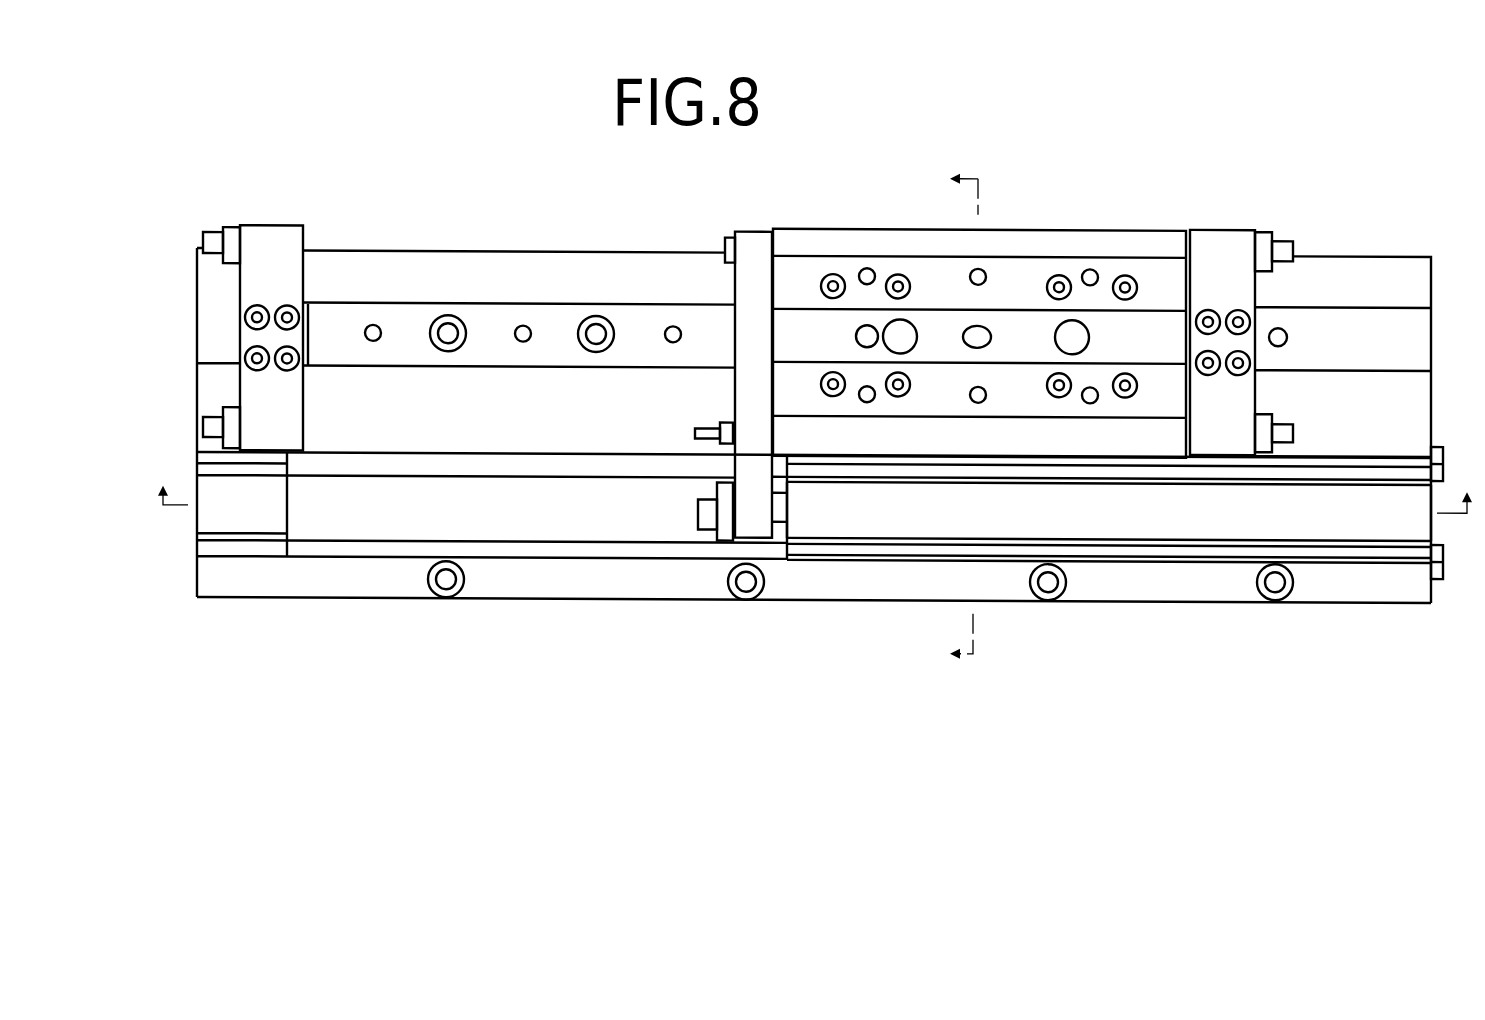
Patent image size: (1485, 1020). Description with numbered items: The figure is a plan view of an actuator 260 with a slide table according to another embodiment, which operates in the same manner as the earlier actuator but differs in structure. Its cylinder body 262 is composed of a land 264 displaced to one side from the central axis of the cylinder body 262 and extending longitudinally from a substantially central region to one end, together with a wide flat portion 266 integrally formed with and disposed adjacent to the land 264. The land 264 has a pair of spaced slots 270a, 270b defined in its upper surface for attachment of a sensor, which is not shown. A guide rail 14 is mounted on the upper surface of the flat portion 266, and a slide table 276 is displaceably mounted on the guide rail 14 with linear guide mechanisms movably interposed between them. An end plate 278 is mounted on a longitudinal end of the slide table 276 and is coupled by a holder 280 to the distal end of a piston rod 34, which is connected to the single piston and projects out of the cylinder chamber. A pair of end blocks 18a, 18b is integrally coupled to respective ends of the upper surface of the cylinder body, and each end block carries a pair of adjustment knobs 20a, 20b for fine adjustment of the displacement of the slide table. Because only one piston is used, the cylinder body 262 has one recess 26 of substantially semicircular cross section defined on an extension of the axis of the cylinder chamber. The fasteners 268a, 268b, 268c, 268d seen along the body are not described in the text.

The guide rail 14 is at (412, 310).
The end block 18a is at (268, 242).
The end block 18b is at (1226, 245).
The adjustment knob 20a is at (213, 420).
The adjustment knob 20b is at (212, 242).
The recess 26 is at (340, 535).
The piston rod 34 is at (780, 527).
The actuator with a slide table 260 is at (1185, 118).
The cylinder body 262 is at (566, 600).
The land 264 is at (1160, 520).
The flat portion 266 is at (558, 385).
The mounting bolt 268a is at (447, 585).
The mounting bolt 268b is at (746, 597).
The mounting bolt 268c is at (1048, 590).
The mounting bolt 268d is at (1275, 588).
The slot 270a is at (845, 527).
The slot 270b is at (1378, 465).
The slide table 276 is at (1060, 232).
The end plate 278 is at (752, 253).
The holder 280 is at (723, 528).